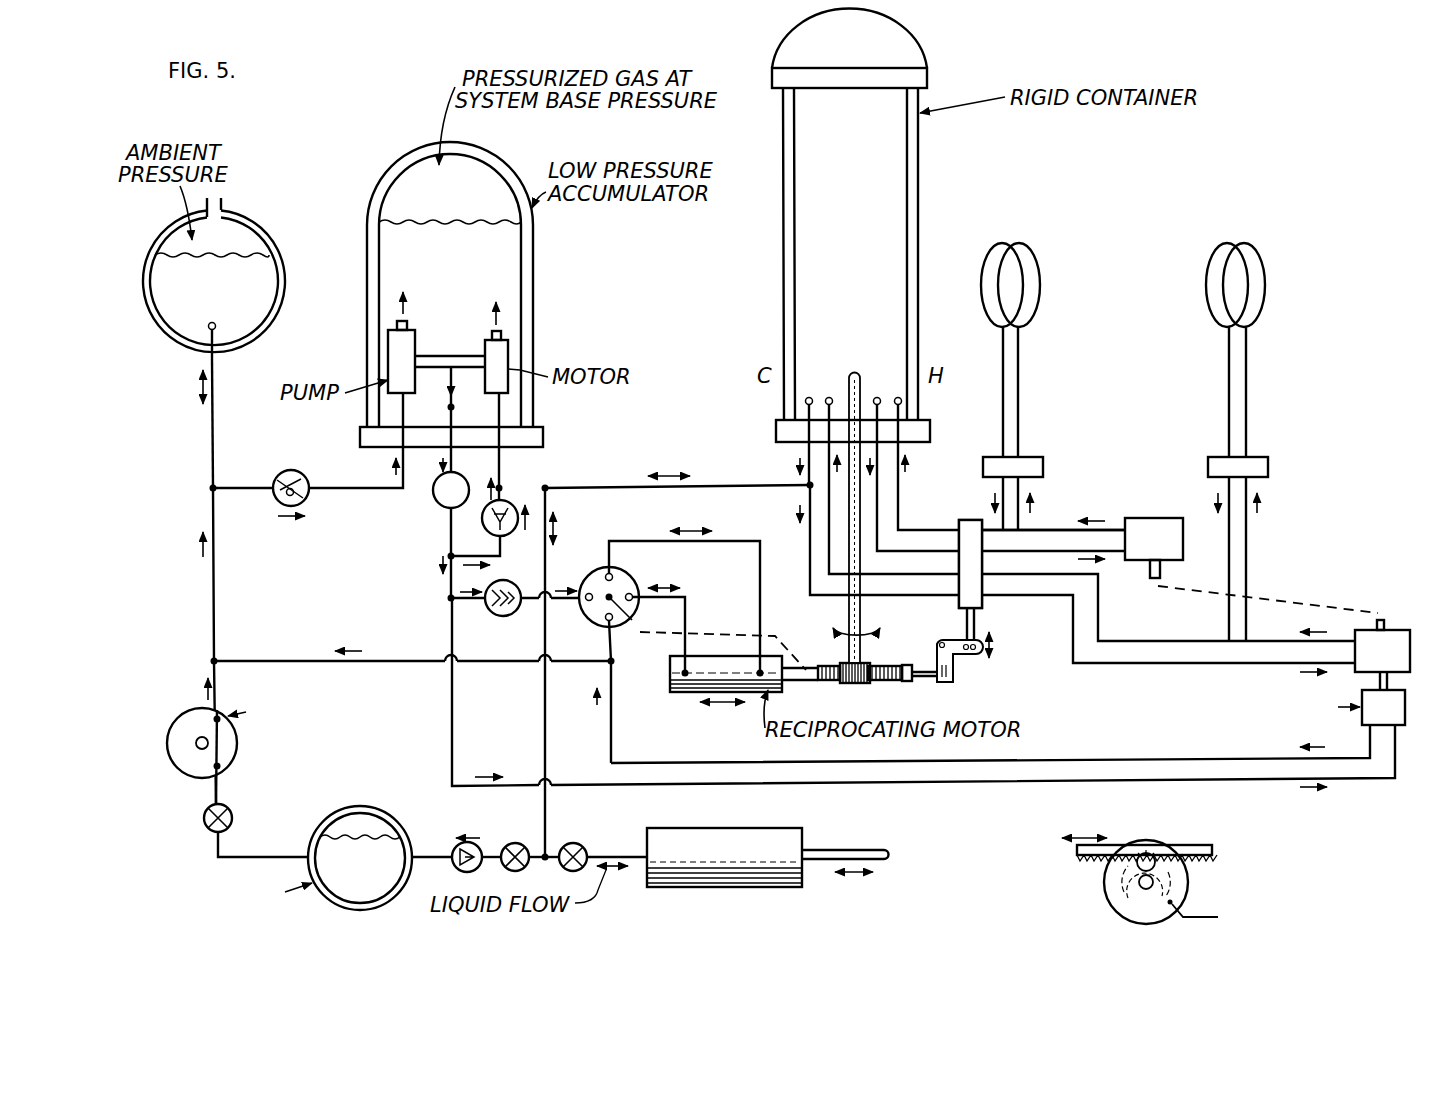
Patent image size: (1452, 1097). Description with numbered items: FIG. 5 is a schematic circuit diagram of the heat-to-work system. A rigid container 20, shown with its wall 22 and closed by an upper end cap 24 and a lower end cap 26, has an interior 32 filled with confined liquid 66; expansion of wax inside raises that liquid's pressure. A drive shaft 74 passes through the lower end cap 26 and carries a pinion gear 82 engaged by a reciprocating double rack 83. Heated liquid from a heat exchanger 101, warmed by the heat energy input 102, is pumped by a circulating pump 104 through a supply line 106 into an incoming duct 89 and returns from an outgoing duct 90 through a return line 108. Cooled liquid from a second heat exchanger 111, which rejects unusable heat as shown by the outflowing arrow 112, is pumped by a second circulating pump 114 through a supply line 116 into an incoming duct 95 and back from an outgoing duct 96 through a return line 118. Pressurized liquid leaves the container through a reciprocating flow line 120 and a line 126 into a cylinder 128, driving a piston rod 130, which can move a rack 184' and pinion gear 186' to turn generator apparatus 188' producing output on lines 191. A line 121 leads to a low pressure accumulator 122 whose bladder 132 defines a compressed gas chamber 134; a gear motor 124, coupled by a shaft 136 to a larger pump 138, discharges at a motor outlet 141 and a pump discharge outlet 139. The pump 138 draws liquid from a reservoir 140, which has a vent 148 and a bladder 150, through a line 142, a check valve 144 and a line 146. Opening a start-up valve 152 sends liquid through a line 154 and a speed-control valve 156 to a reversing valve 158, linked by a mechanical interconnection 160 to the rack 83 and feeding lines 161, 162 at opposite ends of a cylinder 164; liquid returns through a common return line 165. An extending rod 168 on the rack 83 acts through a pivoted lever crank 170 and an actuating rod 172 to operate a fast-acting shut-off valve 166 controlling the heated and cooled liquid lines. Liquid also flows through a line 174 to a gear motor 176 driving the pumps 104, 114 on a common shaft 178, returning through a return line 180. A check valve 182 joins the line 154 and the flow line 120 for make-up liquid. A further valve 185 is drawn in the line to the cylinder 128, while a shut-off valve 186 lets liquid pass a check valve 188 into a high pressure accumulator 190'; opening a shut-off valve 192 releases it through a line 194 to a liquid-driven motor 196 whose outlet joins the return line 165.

The rigid container 20 is at (932, 192).
The rigid container wall 22 is at (919, 160).
The upper end cap 24 is at (927, 72).
The lower end cap 26 is at (931, 434).
The interior 32 is at (872, 150).
The liquid 66 is at (172, 321).
The drive shaft 74 is at (862, 378).
The pinion gear 82 is at (862, 684).
The double rack 83 is at (826, 683).
The incoming duct 89 is at (905, 404).
The outgoing duct 90 is at (910, 418).
The incoming duct 95 is at (800, 404).
The outgoing duct 96 is at (790, 418).
The heat exchanger 101 is at (1000, 245).
The heat energy input arrow 102 is at (1048, 288).
The circulating pump 104 is at (1152, 518).
The supply line 106 is at (960, 520).
The return line 108 is at (940, 516).
The heat exchanger 111 is at (1222, 245).
The outflowing arrow 112 is at (1310, 288).
The second circulating pump 114 is at (1408, 636).
The supply line 116 is at (812, 545).
The return line 118 is at (806, 569).
The reciprocating flow line 120 is at (598, 487).
The line 121 is at (503, 471).
The low pressure accumulator 122 is at (540, 278).
The gear motor 124 is at (508, 345).
The line 126 is at (550, 556).
The cylinder 128 is at (710, 828).
The piston rod 130 is at (835, 848).
The bladder 132 is at (515, 225).
The compressed gas chamber 134 is at (412, 165).
The shaft 136 is at (444, 353).
The pump 138 is at (388, 350).
The discharge outlet 139 is at (397, 323).
The reservoir 140 is at (285, 286).
The motor outlet 141 is at (501, 334).
The line 142 is at (215, 433).
The check valve 144 is at (294, 470).
The line 146 is at (330, 503).
The vent 148 is at (222, 207).
The bladder 150 is at (240, 255).
The start-up valve 152 is at (438, 508).
The line 154 is at (449, 590).
The speed-control valve 156 is at (500, 618).
The reversing valve 158 is at (614, 580).
The mechanical interconnection 160 is at (702, 633).
The line 161 is at (732, 541).
The line 162 is at (690, 598).
The cylinder 164 is at (672, 692).
The common return line 165 is at (216, 571).
The fast-acting shut-off valve 166 is at (982, 604).
The extending rod 168 is at (926, 674).
The pivoted lever crank 170 is at (955, 640).
The actuating rod 172 is at (982, 626).
The line 174 is at (452, 744).
The gear motor 176 is at (1404, 699).
The common shaft 178 is at (1150, 570).
The return line 180 is at (1098, 762).
The check valve 182 is at (506, 536).
The valve 185 is at (580, 846).
The shut-off valve 186 is at (527, 837).
The check valve 188 is at (474, 837).
The high pressure accumulator 190' is at (276, 868).
The lines 191 is at (1218, 917).
The shut-off valve 192 is at (233, 818).
The line 194 is at (222, 784).
The liquid-driven motor 196 is at (172, 716).
The rack 184' is at (1229, 873).
The pinion gear 186' is at (1196, 877).
The generator apparatus 188' is at (1123, 882).